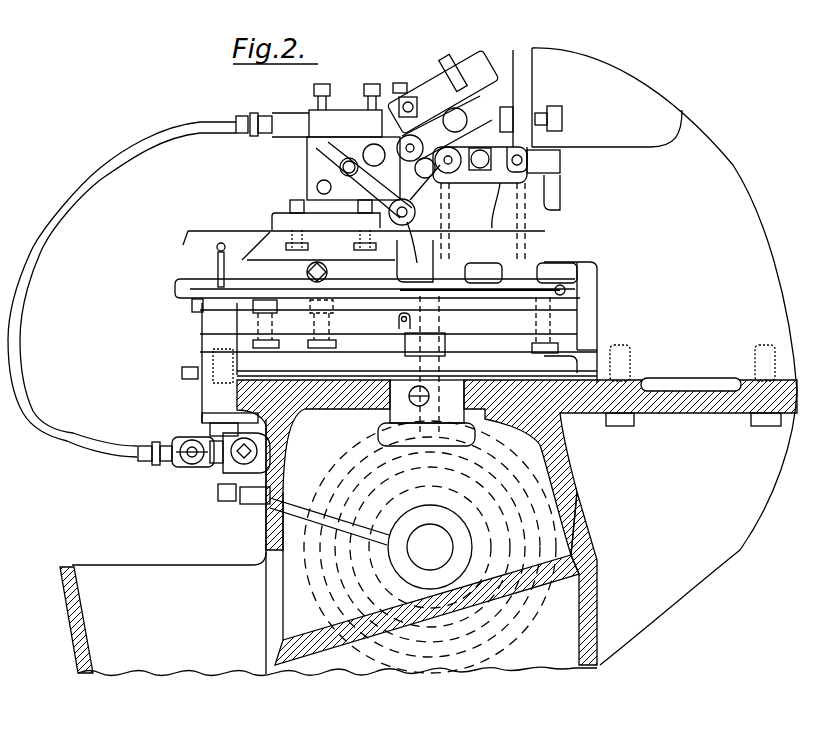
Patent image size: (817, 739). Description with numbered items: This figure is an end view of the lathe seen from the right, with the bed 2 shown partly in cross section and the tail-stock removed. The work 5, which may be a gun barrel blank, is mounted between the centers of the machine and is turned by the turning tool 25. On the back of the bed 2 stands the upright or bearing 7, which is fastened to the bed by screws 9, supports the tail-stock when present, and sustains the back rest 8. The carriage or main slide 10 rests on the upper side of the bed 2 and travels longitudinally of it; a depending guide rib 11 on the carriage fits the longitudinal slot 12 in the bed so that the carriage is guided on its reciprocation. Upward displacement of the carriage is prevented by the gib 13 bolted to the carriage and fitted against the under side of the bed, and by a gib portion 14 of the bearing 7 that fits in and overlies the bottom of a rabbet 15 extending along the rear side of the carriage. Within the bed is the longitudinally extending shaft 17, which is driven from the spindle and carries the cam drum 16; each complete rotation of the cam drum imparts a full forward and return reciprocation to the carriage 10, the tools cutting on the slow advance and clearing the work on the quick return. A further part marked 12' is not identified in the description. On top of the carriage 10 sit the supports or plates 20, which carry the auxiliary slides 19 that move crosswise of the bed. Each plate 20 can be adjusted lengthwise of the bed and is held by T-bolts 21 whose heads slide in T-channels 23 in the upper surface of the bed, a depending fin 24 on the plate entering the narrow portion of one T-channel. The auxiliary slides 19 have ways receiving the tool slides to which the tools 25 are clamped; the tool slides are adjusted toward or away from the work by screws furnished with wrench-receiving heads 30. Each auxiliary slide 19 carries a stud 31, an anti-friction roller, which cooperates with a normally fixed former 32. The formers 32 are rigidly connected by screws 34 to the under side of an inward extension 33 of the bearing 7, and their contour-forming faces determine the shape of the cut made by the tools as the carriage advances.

The bed 2 is at (566, 446).
The work 5 is at (428, 168).
The bearing 7 is at (742, 171).
The back rest 8 is at (490, 135).
The screws 9 is at (760, 424).
The carriage 10 is at (213, 380).
The guide rib 11 is at (574, 503).
The longitudinal slot 12 is at (398, 416).
The clamp block extension 12' is at (433, 401).
The gib 13 is at (240, 469).
The gib portion 14 is at (586, 340).
The rabbet 15 is at (590, 337).
The cam drum 16 is at (270, 603).
The shaft 17 is at (442, 552).
The auxiliary slides 19 is at (580, 292).
The supports 20 is at (213, 322).
The T-bolts 21 is at (535, 343).
The T-channels 23 is at (278, 348).
The fin 24 is at (266, 347).
The turning tool 25 is at (395, 258).
The heads 30 is at (201, 279).
The stud 31 is at (545, 265).
The formers 32 is at (430, 297).
The inward extension 33 is at (500, 232).
The screws 34 is at (456, 227).